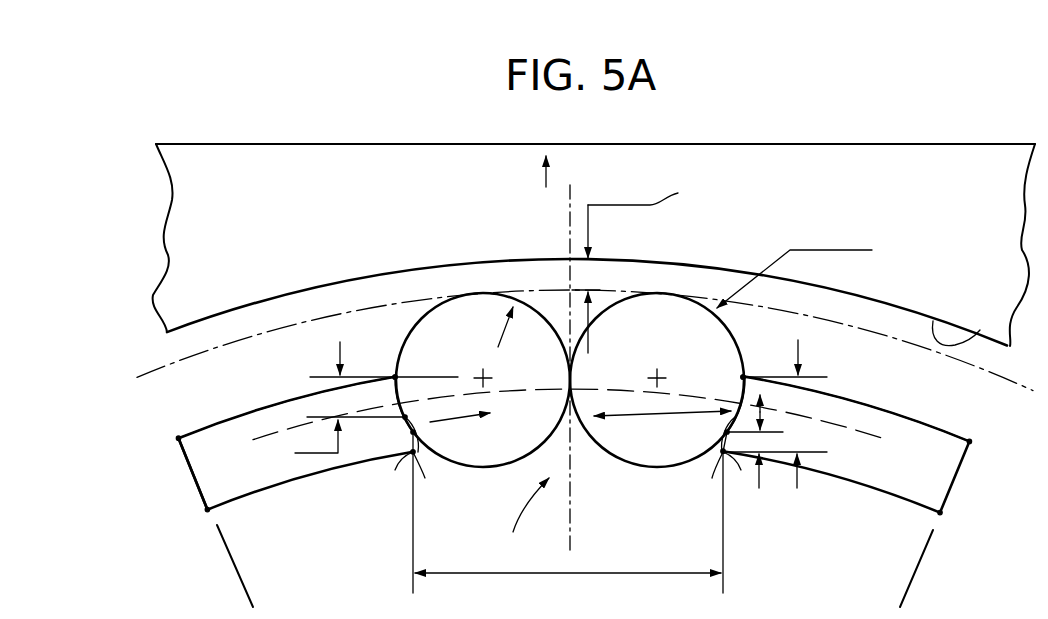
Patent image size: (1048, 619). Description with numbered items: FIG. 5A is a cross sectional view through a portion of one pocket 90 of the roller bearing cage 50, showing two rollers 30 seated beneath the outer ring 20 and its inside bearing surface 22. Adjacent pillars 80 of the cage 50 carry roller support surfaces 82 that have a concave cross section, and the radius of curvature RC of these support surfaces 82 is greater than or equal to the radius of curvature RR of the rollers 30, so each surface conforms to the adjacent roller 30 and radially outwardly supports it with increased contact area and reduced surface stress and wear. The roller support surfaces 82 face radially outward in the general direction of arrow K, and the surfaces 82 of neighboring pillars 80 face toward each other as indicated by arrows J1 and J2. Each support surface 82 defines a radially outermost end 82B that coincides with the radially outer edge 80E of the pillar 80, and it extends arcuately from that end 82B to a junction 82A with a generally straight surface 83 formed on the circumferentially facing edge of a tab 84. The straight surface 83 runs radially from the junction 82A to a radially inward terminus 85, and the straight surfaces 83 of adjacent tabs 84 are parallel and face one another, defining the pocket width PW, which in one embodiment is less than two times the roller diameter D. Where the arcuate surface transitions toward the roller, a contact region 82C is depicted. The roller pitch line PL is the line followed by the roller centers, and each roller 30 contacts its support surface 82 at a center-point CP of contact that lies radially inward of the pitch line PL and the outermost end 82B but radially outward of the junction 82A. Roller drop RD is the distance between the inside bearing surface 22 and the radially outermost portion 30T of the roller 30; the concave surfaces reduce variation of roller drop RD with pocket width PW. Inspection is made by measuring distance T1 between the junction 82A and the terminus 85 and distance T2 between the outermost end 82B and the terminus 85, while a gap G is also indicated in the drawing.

The outer ring 20 is at (190, 165).
The inside bearing surface 22 is at (980, 337).
The roller 30 is at (461, 296).
The radially outermost portion of the roller 30T is at (478, 296).
The cage 50 is at (195, 450).
The pillar 80 is at (218, 482).
The radially outer edge of the pillar 80E is at (395, 378).
The roller support surface 82 is at (713, 440).
The junction 82A is at (423, 440).
The radially outermost end 82B is at (453, 296).
The concave contact surface 82C is at (410, 413).
The straight surface 83 is at (415, 455).
The tab 84 is at (365, 432).
The terminus 85 is at (413, 458).
The pocket 90 is at (517, 518).
The center-point of contact CP is at (490, 378).
The diameter of the rollers D is at (805, 273).
The gap G is at (318, 453).
The arrow J1 is at (452, 420).
The arrow J2 is at (623, 415).
The arrow K is at (547, 187).
The roller pitch line PL is at (843, 423).
The pocket width PW is at (533, 573).
The radius of curvature of the roller support surfaces RC is at (688, 403).
The roller drop RD is at (585, 289).
The radius of curvature of the rollers RR is at (516, 305).
The distance T1 is at (762, 442).
The distance T2 is at (775, 413).